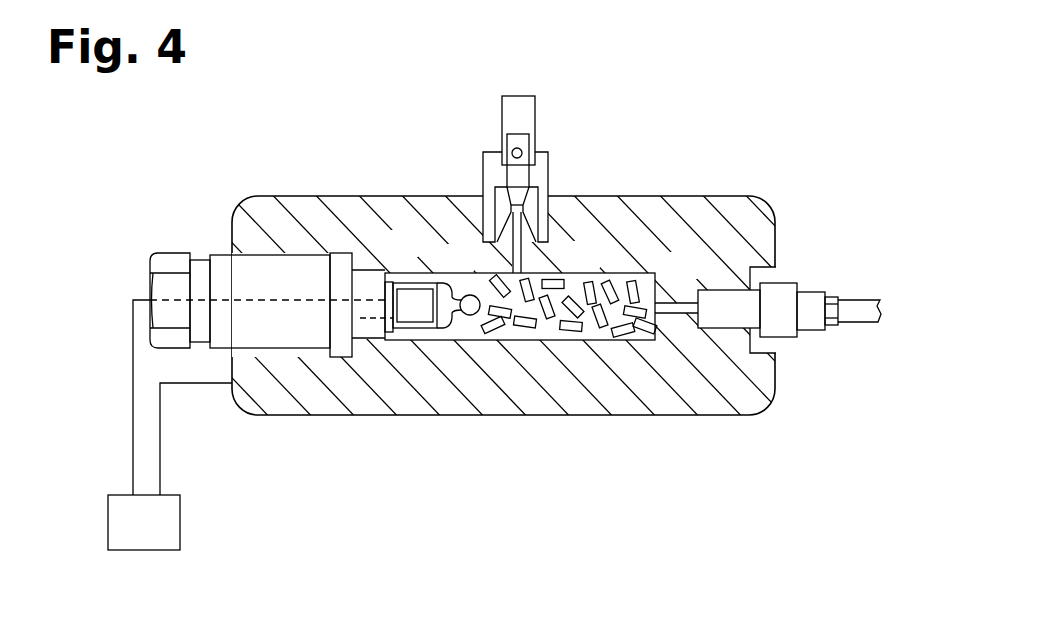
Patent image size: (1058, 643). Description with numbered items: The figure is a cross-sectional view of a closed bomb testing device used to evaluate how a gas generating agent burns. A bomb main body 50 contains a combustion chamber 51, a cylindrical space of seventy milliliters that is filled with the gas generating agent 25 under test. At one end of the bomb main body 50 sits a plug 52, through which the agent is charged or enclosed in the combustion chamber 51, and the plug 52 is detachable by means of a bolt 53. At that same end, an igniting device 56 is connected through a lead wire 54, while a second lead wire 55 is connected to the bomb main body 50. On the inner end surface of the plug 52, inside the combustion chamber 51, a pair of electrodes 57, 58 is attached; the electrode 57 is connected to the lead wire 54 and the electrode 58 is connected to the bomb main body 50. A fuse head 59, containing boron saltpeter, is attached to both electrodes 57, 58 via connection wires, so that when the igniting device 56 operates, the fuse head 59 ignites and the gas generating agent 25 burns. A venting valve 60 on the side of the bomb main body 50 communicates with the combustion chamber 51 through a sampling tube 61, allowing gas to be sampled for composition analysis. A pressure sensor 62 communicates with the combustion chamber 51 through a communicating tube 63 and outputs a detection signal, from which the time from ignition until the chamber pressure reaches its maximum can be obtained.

The bomb main body 50 is at (638, 196).
The combustion chamber 51 is at (543, 277).
The plug 52 is at (270, 267).
The bolt 53 is at (177, 253).
The lead wire 54 is at (133, 437).
The lead wire 55 is at (160, 472).
The igniting device 56 is at (181, 525).
The electrode 57 is at (410, 272).
The electrode 58 is at (417, 322).
The fuse head 59 is at (470, 316).
The venting valve 60 is at (525, 175).
The sampling tube 61 is at (512, 254).
The pressure sensor 62 is at (807, 290).
The communicating tube 63 is at (678, 305).
The gas generating agent 25 is at (528, 325).